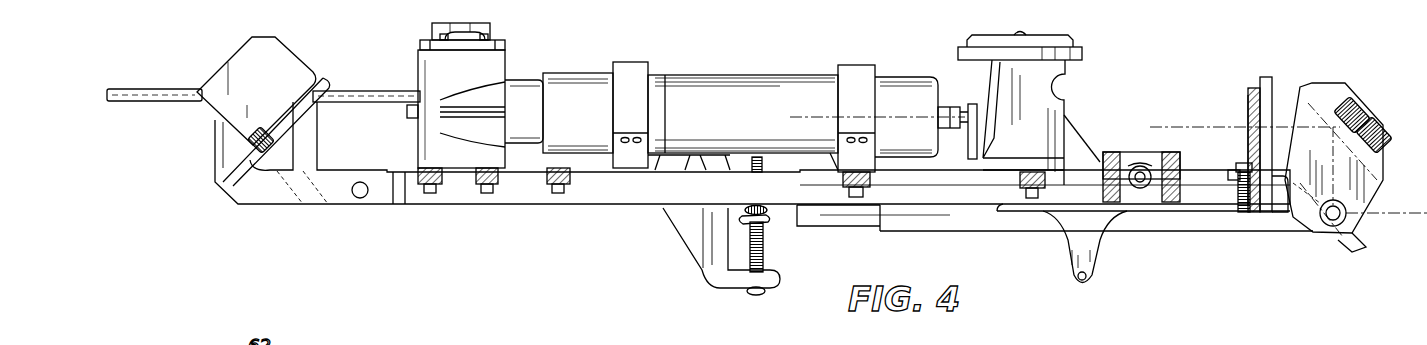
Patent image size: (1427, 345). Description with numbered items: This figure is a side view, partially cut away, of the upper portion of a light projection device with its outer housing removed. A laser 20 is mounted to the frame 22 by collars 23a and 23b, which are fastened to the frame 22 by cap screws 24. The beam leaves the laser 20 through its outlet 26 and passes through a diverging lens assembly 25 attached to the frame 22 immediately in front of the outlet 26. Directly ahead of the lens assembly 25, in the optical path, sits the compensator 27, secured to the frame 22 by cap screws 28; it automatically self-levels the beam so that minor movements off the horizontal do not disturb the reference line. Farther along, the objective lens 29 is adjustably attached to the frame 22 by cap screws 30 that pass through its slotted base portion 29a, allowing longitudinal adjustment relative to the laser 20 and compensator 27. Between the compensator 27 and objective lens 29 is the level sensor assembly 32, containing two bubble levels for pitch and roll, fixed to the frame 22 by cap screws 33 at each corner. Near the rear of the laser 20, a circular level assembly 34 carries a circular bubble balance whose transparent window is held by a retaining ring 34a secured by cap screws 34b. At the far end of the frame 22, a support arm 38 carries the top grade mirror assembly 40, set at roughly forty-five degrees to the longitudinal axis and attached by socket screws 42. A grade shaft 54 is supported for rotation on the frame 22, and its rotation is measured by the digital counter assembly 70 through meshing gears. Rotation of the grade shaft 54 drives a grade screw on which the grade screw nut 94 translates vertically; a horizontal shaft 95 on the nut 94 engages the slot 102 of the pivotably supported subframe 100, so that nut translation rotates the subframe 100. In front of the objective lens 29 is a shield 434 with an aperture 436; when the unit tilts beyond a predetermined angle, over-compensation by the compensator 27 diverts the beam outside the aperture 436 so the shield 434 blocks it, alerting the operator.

The laser 20 is at (727, 119).
The frame 22 is at (618, 204).
The collar 23a is at (642, 77).
The collar 23b is at (865, 77).
The cap screws 24 is at (857, 198).
The diverging lens assembly 25 is at (972, 132).
The outlet 26 is at (962, 110).
The compensator 27 is at (1046, 140).
The cap screws 28 is at (1020, 178).
The objective lens 29 is at (1267, 88).
The base portion 29a is at (1240, 175).
The cap screws 30 is at (1246, 170).
The level sensor assembly 32 is at (1143, 148).
The cap screws 33 is at (1106, 160).
The circular level assembly 34 is at (466, 78).
The retaining ring 34a is at (420, 43).
The cap screws 34b is at (492, 33).
The support arm 38 is at (1378, 192).
The top grade mirror assembly 40 is at (1300, 87).
The socket screws 42 is at (1358, 98).
The grade shaft 54 is at (188, 92).
The digital counter assembly 70 is at (298, 101).
The grade screw nut 94 is at (764, 214).
The shaft 95 is at (762, 220).
The subframe 100 is at (888, 212).
The slot 102 is at (750, 206).
The shield 434 is at (1252, 92).
The aperture 436 is at (1251, 120).